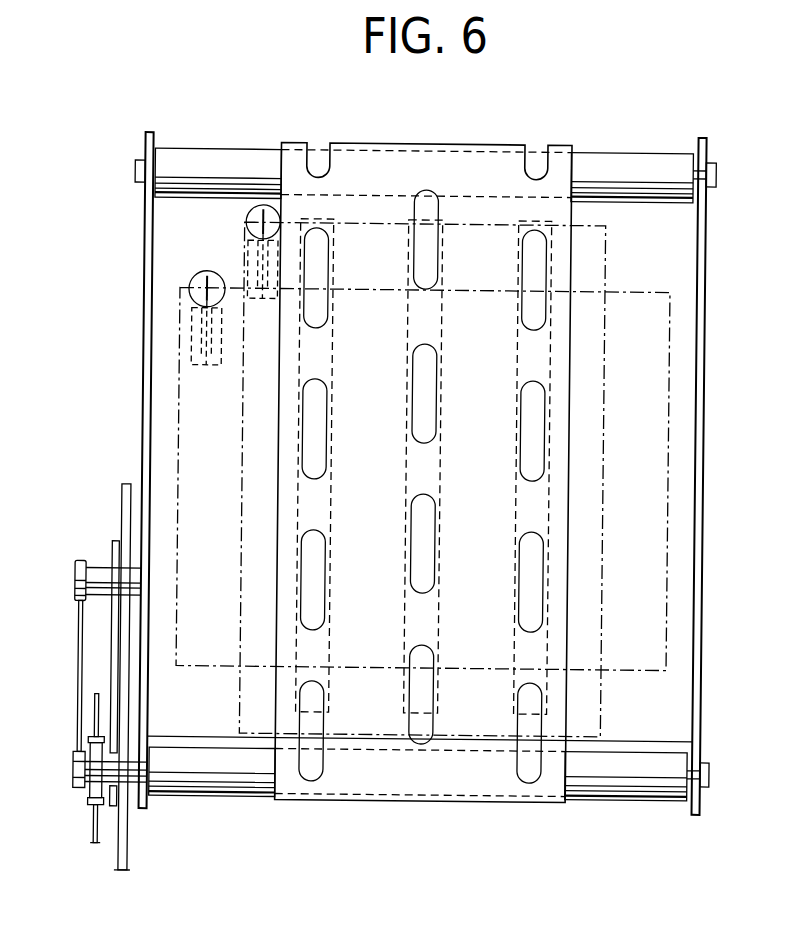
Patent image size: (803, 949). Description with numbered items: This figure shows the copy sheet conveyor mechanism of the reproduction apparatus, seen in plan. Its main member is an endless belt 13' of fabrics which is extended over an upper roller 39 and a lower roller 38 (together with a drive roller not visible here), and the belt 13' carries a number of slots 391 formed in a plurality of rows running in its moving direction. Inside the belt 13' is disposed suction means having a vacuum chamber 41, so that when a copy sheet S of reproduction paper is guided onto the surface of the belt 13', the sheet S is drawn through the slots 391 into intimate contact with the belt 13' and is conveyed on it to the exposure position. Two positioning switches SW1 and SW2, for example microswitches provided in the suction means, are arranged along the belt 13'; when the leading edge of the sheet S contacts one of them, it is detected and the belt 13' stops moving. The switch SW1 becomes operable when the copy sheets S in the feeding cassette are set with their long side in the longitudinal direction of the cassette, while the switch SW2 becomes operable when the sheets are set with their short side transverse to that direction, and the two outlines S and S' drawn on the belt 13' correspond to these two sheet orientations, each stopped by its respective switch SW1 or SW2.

The endless belt 13' is at (458, 473).
The slots 391 is at (425, 198).
The roller 39 is at (635, 166).
The roller 38 is at (635, 785).
The vacuum chamber 41 is at (156, 273).
The copy sheet S is at (447, 477).
The large sheet S' is at (457, 479).
The positioning switch SW1 is at (253, 267).
The positioning switch SW2 is at (214, 372).